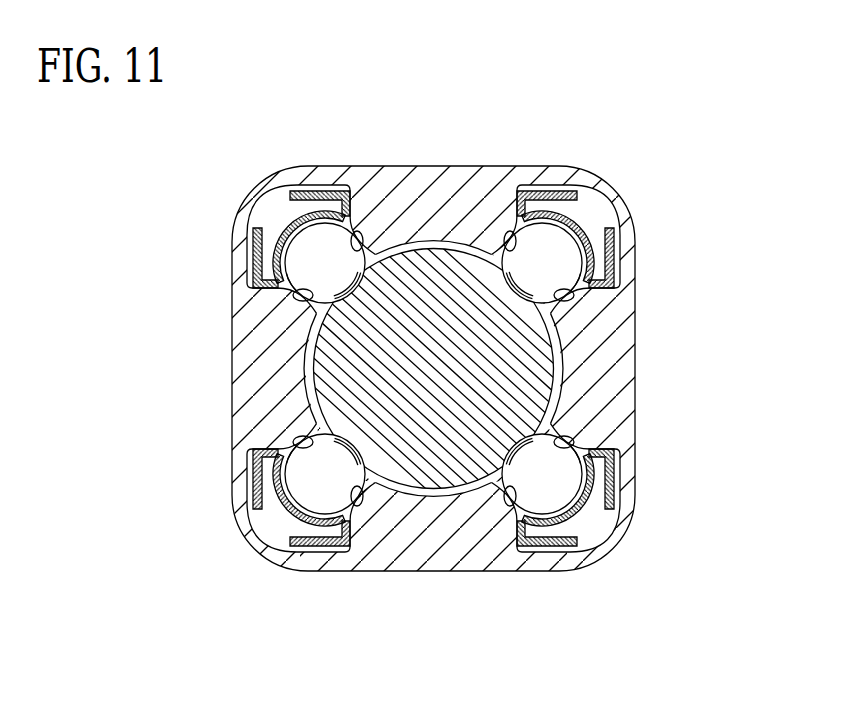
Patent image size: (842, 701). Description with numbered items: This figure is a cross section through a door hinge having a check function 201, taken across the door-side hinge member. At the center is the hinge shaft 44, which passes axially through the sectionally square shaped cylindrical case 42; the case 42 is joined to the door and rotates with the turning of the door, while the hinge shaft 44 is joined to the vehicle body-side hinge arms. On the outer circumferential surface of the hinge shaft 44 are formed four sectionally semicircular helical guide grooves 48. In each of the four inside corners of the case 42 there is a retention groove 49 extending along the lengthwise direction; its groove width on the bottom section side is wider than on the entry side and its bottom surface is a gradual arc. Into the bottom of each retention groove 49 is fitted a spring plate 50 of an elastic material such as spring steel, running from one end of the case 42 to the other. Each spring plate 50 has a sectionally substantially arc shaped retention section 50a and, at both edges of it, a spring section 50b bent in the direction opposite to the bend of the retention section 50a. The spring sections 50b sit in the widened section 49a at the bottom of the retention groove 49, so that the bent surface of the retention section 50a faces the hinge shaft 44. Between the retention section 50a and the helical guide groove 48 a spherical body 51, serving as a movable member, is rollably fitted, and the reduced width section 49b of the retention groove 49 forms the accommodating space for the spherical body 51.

The torque transmission device 201 is at (460, 370).
The case 42 is at (620, 362).
The hinge shaft 44 is at (432, 272).
The helical guide groove 48 is at (247, 250).
The retention groove 49 is at (358, 237).
The widened section 49a is at (248, 283).
The reduced width section 49b is at (300, 296).
The spring plate 50 is at (432, 370).
The retention section 50a is at (293, 222).
The spring section 50b is at (624, 597).
The spherical body 51 is at (316, 254).